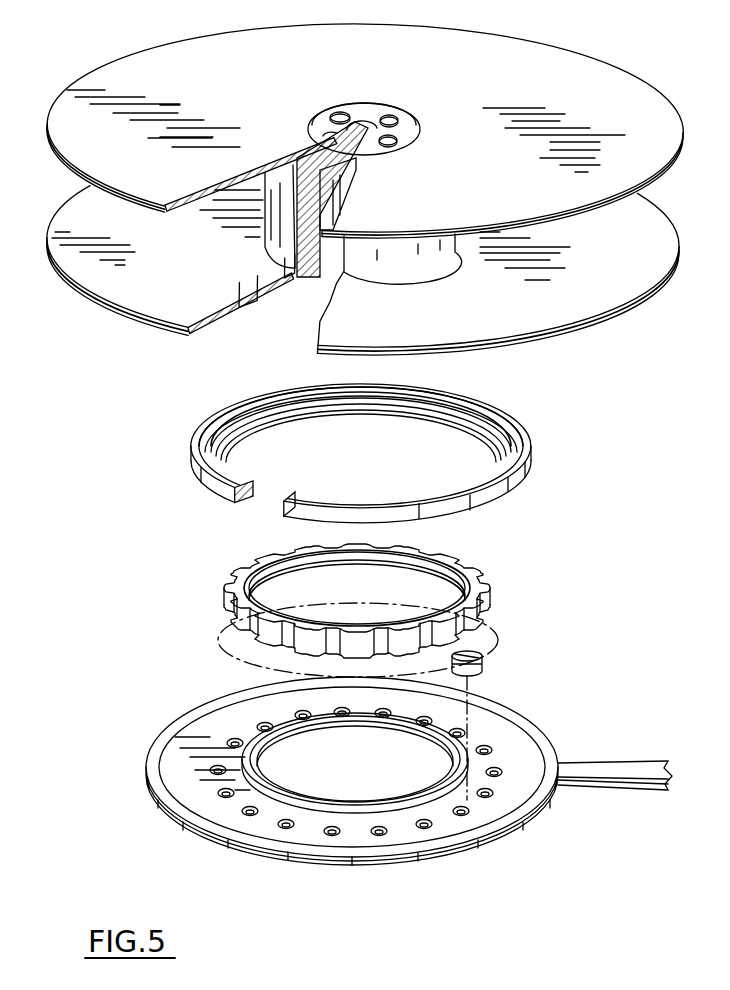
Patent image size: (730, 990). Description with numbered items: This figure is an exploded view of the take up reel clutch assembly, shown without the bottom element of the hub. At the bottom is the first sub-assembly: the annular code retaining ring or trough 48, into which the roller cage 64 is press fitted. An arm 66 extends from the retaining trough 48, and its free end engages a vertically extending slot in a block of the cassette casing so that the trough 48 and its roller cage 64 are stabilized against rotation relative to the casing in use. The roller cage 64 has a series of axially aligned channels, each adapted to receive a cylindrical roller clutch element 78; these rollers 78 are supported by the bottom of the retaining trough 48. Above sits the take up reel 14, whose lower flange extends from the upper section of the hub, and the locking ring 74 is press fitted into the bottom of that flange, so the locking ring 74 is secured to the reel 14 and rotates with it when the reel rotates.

The take up reel 14 is at (583, 63).
The locking ring 74 is at (208, 412).
The roller cage 64 is at (483, 593).
The roller 78 is at (490, 660).
The code retaining ring 48 is at (538, 763).
The arm 66 is at (617, 790).